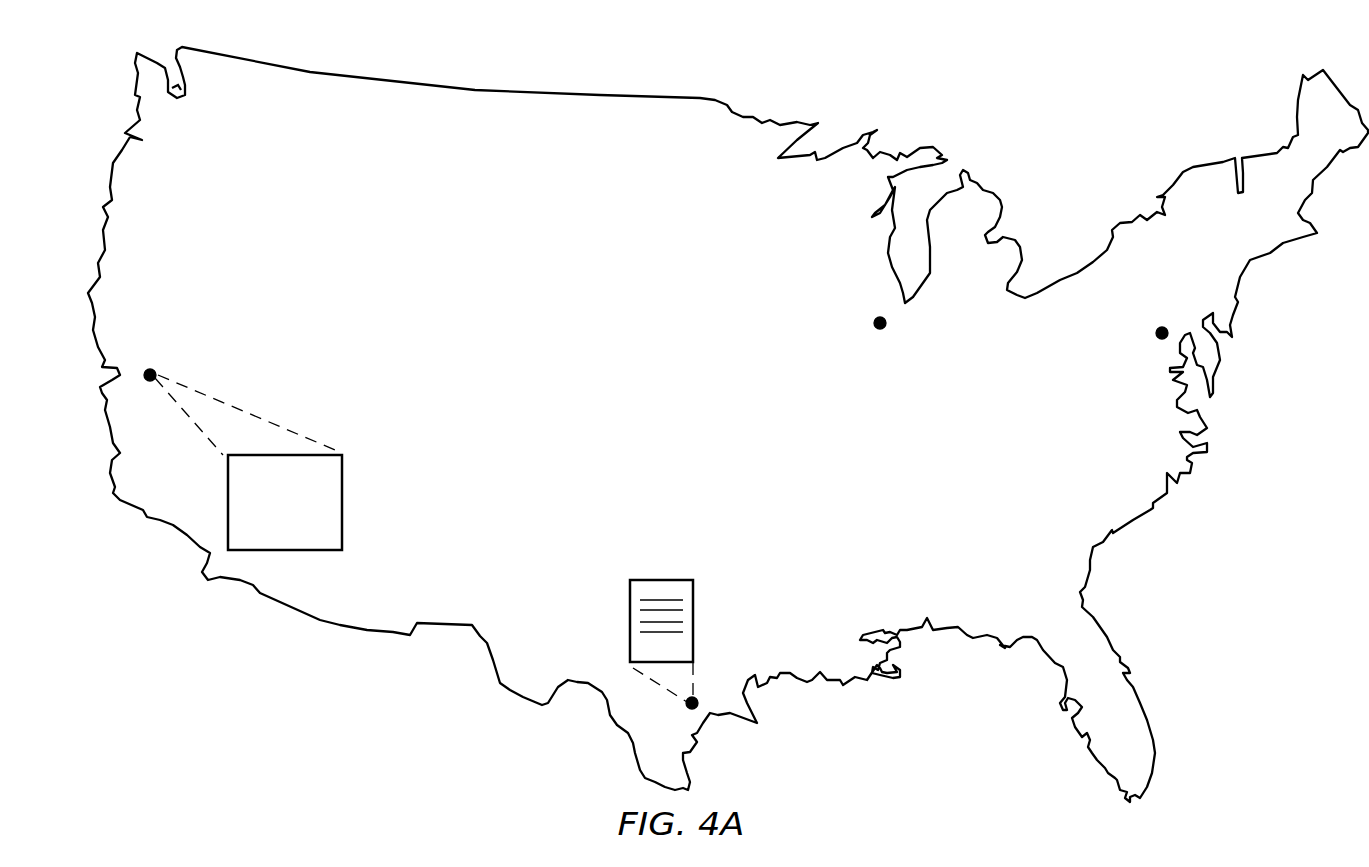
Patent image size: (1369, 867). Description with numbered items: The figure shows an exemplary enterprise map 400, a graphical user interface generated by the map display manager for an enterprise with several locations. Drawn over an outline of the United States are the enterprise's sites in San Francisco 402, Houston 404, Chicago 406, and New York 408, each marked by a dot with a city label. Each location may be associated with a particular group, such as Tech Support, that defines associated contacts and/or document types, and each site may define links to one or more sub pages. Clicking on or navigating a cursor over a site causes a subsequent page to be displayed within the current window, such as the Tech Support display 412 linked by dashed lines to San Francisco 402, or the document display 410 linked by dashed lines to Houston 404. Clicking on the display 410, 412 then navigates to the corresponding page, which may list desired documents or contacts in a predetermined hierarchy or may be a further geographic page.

The enterprise map 400 is at (650, 343).
The San Francisco location 402 is at (153, 365).
The Houston location 404 is at (696, 702).
The Chicago location 406 is at (882, 332).
The New York location 408 is at (1150, 332).
The document display 410 is at (693, 622).
The Tech Support display 412 is at (227, 493).